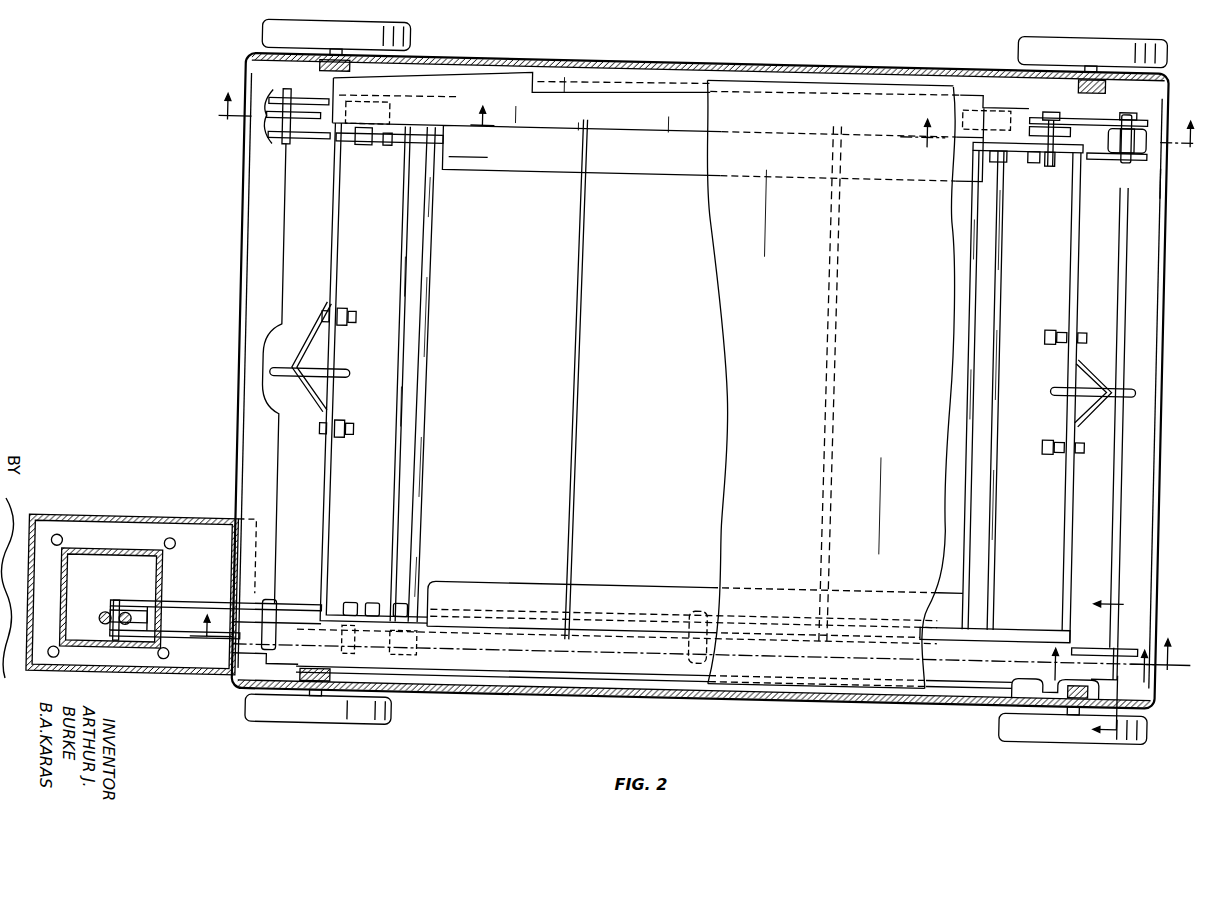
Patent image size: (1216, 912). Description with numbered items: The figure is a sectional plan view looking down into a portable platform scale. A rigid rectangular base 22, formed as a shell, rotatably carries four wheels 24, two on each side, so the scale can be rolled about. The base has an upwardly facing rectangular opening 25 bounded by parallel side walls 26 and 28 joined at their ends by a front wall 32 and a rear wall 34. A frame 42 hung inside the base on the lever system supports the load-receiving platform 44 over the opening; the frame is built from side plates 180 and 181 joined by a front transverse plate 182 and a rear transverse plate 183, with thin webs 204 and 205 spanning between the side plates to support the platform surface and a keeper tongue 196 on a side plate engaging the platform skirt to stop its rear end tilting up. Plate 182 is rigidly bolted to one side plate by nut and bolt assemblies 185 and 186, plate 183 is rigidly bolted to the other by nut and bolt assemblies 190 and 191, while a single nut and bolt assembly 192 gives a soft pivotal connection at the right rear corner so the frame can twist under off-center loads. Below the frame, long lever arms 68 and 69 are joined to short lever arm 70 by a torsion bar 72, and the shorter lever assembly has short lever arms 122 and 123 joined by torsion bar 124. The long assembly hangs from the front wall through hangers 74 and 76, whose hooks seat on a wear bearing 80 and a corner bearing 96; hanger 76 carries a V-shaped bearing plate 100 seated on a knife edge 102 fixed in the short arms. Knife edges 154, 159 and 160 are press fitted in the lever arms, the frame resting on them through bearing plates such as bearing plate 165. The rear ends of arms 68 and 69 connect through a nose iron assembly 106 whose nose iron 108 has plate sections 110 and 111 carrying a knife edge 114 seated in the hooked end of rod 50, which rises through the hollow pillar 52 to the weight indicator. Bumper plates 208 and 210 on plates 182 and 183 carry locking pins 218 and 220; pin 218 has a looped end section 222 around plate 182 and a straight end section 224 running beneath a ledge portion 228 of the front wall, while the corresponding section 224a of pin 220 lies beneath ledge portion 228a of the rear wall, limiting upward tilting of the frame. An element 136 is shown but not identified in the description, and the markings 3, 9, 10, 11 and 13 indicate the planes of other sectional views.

The section line 3- 3 is at (688, 655).
The section line 9- 9 is at (1048, 144).
The section line 10- 10 is at (1097, 674).
The section line 11- 11 is at (1116, 663).
The section line 13- 13 is at (355, 121).
The base 22 is at (671, 380).
The wheels 24 is at (706, 384).
The rectangular opening 25 is at (1098, 280).
The side wall 26 is at (694, 709).
The side wall 28 is at (545, 3).
The front wall 32 is at (1175, 394).
The rear wall 34 is at (219, 370).
The frame 42 is at (667, 196).
The load-receiving platform 44 is at (827, 384).
The rod 50 is at (103, 600).
The pillar 52 is at (141, 594).
The long lever arm 68 is at (711, 618).
The long lever arm 69 is at (590, 608).
The short lever arm 70 is at (1027, 163).
The torsion bar 72 is at (1005, 390).
The hanger 74 is at (1101, 671).
The hanger 76 is at (1118, 123).
The wear bearing 80 is at (1117, 648).
The corner bearing 96 is at (1176, 195).
The bearing plate 100 is at (1116, 179).
The knife edge 102 is at (1139, 170).
The nose iron assembly 106 is at (101, 579).
The nose iron 108 is at (93, 654).
The plate section 110 is at (99, 655).
The plate section 111 is at (129, 603).
The knife edge 114 is at (135, 655).
The short lever arm 122 is at (386, 158).
The short lever arm 123 is at (674, 108).
The torsion bar 124 is at (438, 374).
The bolt 136 is at (283, 610).
The knife edge 154 is at (725, 631).
The knife edge 159 is at (1058, 178).
The knife edge 160 is at (359, 613).
The bearing plate 165 is at (1086, 129).
The side plate 180 is at (244, 524).
The side plate 181 is at (681, 122).
The front transverse plate 182 is at (1048, 397).
The rear transverse plate 183 is at (379, 373).
The nut and bolt assembly 185 is at (990, 181).
The nut and bolt assembly 186 is at (1023, 180).
The nut and bolt assembly 190 is at (363, 578).
The nut and bolt assembly 191 is at (423, 596).
The nut and bolt assembly 192 is at (367, 167).
The keeper tongue 196 is at (175, 640).
The web 204 is at (599, 379).
The web 205 is at (808, 385).
The bumper plate 208 is at (1082, 393).
The bumper plate 210 is at (305, 356).
The locking pin 218 is at (1129, 425).
The locking pin 220 is at (330, 358).
The looped end section 222 is at (1076, 382).
The straight end section 224 is at (1165, 378).
The straight end section 224a is at (339, 372).
The ledge portion 228 is at (1135, 418).
The ledge portion 228a is at (229, 372).